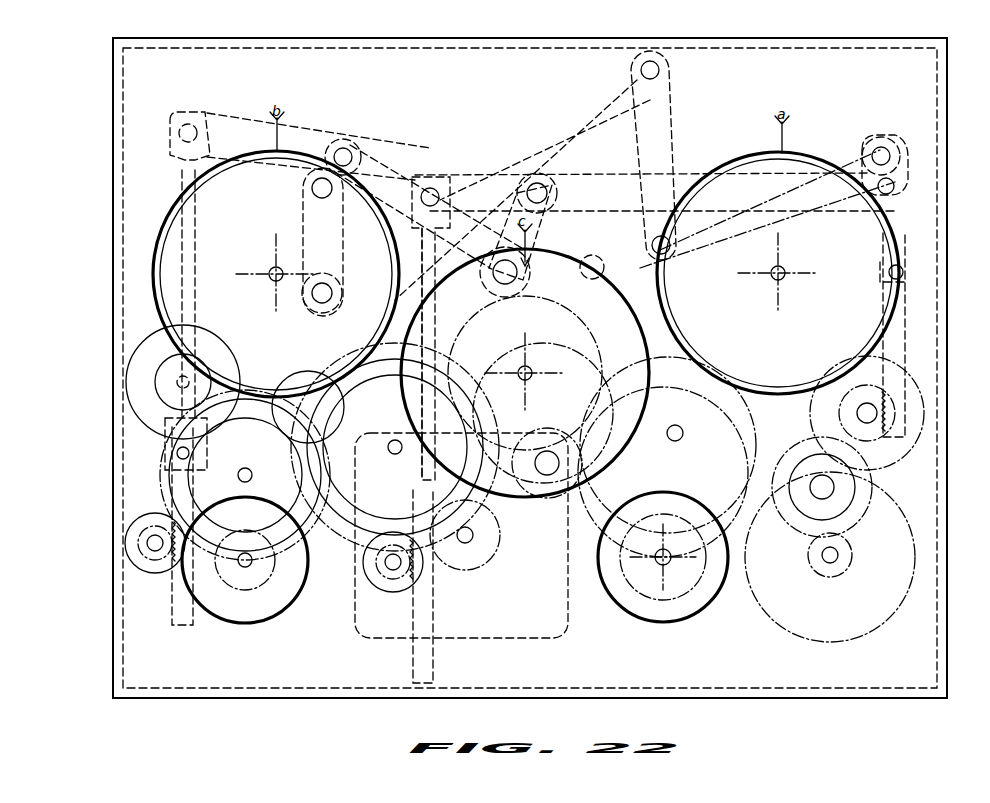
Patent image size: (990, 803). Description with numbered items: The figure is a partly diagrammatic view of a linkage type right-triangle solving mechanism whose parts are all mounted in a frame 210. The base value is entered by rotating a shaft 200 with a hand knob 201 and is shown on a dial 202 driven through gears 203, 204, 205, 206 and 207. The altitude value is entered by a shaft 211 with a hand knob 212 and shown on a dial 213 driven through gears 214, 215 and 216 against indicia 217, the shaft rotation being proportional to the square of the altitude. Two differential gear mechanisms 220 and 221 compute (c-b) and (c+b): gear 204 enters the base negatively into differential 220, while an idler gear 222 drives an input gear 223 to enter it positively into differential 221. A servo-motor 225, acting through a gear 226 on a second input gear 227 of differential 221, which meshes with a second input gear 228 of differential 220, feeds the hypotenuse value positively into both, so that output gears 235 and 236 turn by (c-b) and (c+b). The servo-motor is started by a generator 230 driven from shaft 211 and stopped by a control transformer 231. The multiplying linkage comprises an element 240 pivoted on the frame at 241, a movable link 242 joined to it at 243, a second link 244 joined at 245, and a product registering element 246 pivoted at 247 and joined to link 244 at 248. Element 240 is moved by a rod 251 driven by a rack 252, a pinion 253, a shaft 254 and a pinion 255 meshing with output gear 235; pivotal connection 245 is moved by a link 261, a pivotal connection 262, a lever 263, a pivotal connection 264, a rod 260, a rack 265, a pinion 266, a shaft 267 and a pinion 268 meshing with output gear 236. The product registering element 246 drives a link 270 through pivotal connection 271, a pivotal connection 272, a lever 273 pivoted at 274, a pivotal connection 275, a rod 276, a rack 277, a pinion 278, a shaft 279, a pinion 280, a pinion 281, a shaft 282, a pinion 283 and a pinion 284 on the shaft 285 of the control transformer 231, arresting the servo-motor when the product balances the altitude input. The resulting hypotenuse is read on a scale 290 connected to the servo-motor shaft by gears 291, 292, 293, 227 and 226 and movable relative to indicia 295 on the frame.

The shaft 200 is at (248, 568).
The hand knob 201 is at (250, 623).
The dial 202 is at (165, 208).
The gear 203 is at (237, 590).
The gear 204 is at (262, 422).
The gear 205 is at (128, 370).
The gear 206 is at (158, 362).
The gear 207 is at (237, 274).
The frame 210 is at (113, 92).
The shaft 211 is at (658, 562).
The hand knob 212 is at (630, 605).
The dial 213 is at (815, 165).
The gear 214 is at (696, 615).
The gear 215 is at (778, 290).
The gear 216 is at (790, 386).
The indicia 217 is at (803, 120).
The differential gear mechanism 220 is at (245, 475).
The differential gear mechanism 221 is at (395, 447).
The idler gear 222 is at (313, 371).
The input gear 223 is at (390, 383).
The servo-motor 225 is at (380, 640).
The gear 226 is at (478, 568).
The second input gear 227 is at (365, 530).
The second input gear 228 is at (175, 470).
The generator 230 is at (185, 137).
The control transformer 231 is at (822, 642).
The output gear 235 is at (160, 490).
The output gear 236 is at (375, 548).
The element 240 is at (446, 166).
The pivot 241 is at (556, 177).
The movable link 242 is at (378, 160).
The pivotal connection 243 is at (345, 148).
The second link 244 is at (476, 280).
The pivotal connection 245 is at (518, 278).
The product registering element 246 is at (303, 218).
The pivot 247 is at (312, 300).
The pivotal connection 248 is at (312, 188).
The rod 251 is at (182, 228).
The rack 252 is at (170, 594).
The pinion 253 is at (133, 537).
The shaft 254 is at (147, 543).
The pinion 255 is at (128, 556).
The rod 260 is at (441, 351).
The link 261 is at (540, 250).
The pivotal connection 262 is at (548, 196).
The lever 263 is at (834, 212).
The pivotal connection 264 is at (430, 188).
The rack 265 is at (434, 664).
The pinion 266 is at (375, 562).
The shaft 267 is at (380, 574).
The pinion 268 is at (388, 588).
The link 270 is at (678, 127).
The pivotal connection 271 is at (668, 72).
The pivotal connection 272 is at (672, 252).
The lever 273 is at (775, 220).
The pivot 274 is at (592, 280).
The pivotal connection 275 is at (884, 147).
The rod 276 is at (905, 218).
The rack 277 is at (906, 330).
The pinion 278 is at (857, 413).
The shaft 279 is at (862, 420).
The pinion 280 is at (900, 456).
The pinion 281 is at (795, 515).
The shaft 282 is at (818, 488).
The pinion 283 is at (862, 518).
The pinion 284 is at (852, 560).
The shaft 285 is at (825, 562).
The scale 290 is at (648, 400).
The gear 291 is at (590, 333).
The gear 292 is at (535, 470).
The gear 293 is at (625, 460).
The indicia 295 is at (546, 227).